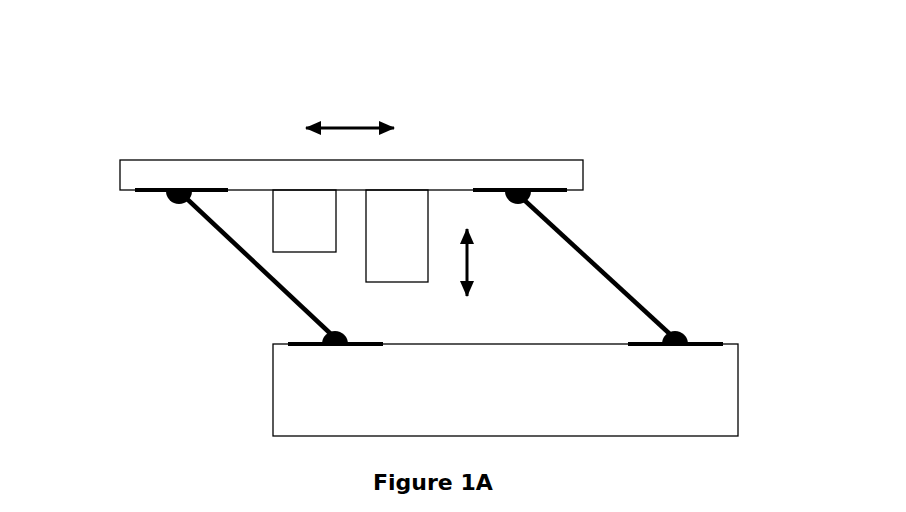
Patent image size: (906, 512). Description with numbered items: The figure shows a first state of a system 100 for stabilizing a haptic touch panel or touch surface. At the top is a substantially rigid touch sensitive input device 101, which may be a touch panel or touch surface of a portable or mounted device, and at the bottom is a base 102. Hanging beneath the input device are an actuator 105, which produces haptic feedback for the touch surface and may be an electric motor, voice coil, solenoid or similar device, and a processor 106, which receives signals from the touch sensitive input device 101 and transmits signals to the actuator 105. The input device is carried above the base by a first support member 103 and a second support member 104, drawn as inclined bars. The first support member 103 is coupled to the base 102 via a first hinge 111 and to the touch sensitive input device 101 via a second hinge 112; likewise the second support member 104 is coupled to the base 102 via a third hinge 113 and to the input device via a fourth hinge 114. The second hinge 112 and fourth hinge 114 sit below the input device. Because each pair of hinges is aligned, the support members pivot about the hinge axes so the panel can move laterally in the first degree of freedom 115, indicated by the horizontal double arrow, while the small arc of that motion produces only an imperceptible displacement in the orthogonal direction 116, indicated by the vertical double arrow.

The system 100 is at (521, 94).
The touch sensitive input device 101 is at (573, 183).
The base 102 is at (728, 430).
The first support member 103 is at (226, 256).
The second support member 104 is at (647, 277).
The actuator 105 is at (326, 245).
The processor 106 is at (418, 276).
The first hinge 111 is at (288, 326).
The second hinge 112 is at (150, 225).
The third hinge 113 is at (702, 316).
The fourth hinge 114 is at (570, 209).
The first degree of freedom 115 is at (365, 114).
The orthogonal direction 116 is at (520, 276).